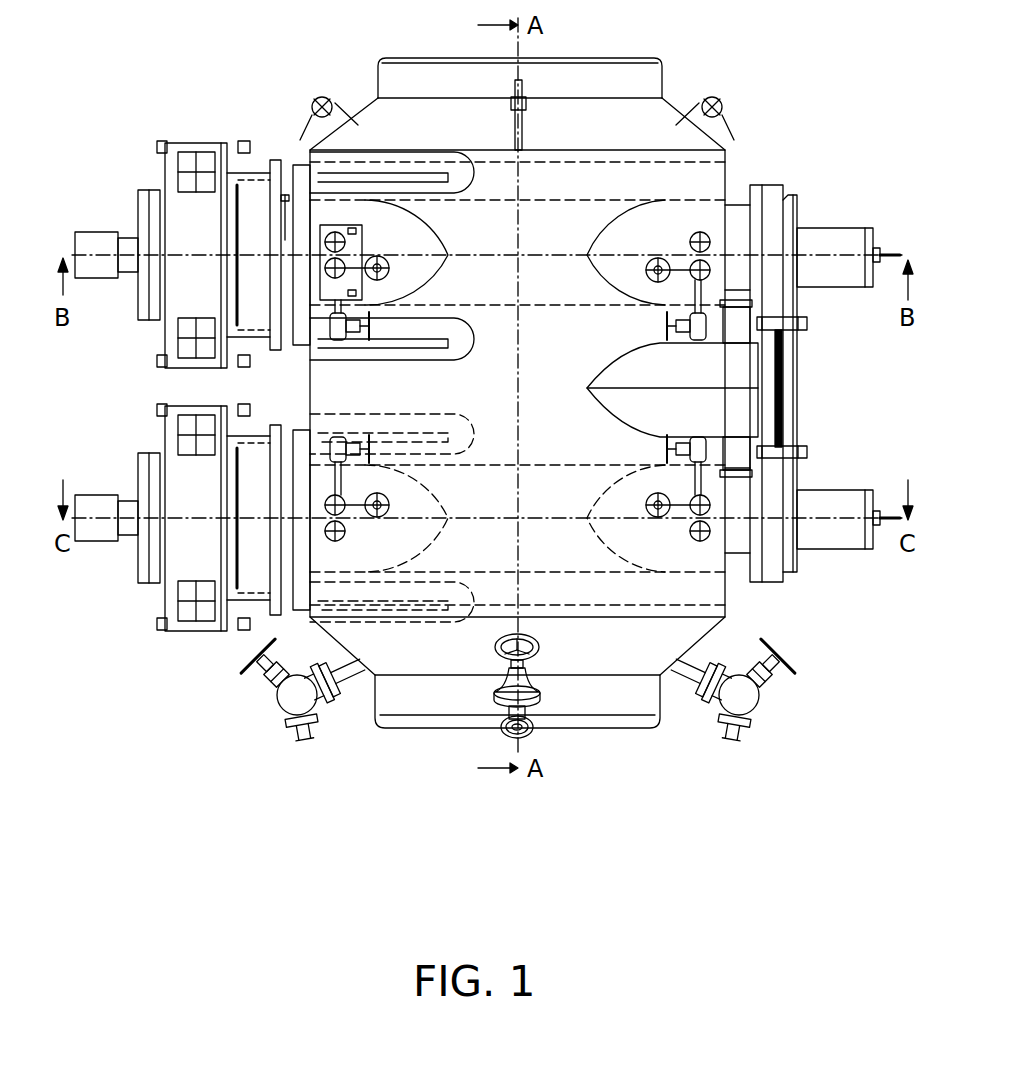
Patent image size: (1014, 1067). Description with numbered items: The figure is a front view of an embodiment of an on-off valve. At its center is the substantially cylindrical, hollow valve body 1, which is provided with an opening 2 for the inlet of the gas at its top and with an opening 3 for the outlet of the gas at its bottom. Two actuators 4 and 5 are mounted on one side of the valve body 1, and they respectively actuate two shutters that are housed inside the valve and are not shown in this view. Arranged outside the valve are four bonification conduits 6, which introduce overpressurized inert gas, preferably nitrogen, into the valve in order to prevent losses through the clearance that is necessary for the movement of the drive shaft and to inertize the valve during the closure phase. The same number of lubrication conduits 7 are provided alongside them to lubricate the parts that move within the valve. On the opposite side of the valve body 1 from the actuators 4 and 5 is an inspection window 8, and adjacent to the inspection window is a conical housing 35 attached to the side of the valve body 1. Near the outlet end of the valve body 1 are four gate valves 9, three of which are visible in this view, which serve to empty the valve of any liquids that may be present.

The valve body 1 is at (700, 60).
The opening for the inlet of the gas 2 is at (575, 58).
The opening for the outlet of the gas 3 is at (640, 728).
The actuator 4 is at (175, 200).
The actuator 5 is at (175, 468).
The bonification conduits 6 is at (360, 272).
The lubrication conduits 7 is at (330, 290).
The inspection window 8 is at (792, 357).
The gate valves 9 is at (305, 708).
The conical housing 35 is at (740, 327).